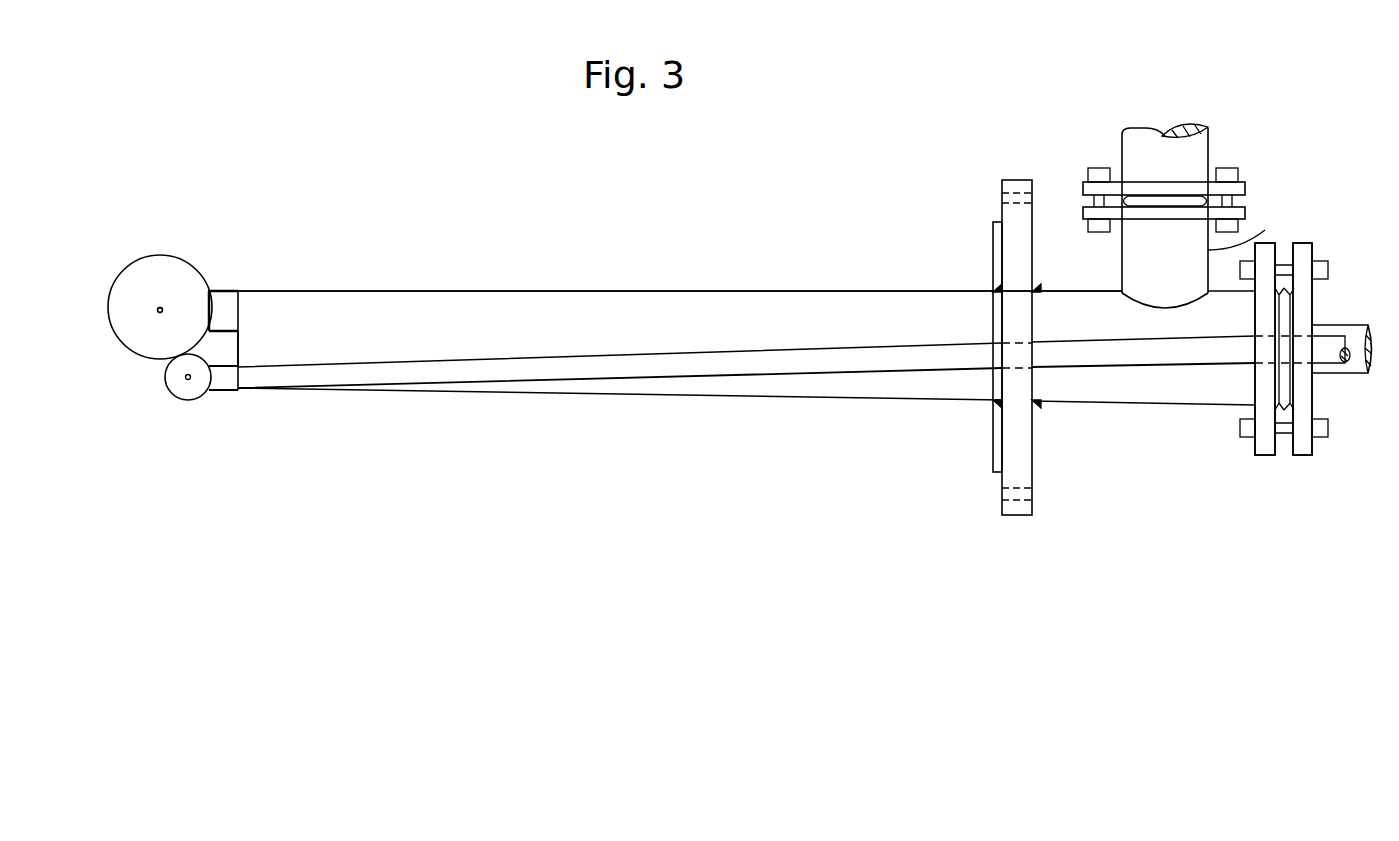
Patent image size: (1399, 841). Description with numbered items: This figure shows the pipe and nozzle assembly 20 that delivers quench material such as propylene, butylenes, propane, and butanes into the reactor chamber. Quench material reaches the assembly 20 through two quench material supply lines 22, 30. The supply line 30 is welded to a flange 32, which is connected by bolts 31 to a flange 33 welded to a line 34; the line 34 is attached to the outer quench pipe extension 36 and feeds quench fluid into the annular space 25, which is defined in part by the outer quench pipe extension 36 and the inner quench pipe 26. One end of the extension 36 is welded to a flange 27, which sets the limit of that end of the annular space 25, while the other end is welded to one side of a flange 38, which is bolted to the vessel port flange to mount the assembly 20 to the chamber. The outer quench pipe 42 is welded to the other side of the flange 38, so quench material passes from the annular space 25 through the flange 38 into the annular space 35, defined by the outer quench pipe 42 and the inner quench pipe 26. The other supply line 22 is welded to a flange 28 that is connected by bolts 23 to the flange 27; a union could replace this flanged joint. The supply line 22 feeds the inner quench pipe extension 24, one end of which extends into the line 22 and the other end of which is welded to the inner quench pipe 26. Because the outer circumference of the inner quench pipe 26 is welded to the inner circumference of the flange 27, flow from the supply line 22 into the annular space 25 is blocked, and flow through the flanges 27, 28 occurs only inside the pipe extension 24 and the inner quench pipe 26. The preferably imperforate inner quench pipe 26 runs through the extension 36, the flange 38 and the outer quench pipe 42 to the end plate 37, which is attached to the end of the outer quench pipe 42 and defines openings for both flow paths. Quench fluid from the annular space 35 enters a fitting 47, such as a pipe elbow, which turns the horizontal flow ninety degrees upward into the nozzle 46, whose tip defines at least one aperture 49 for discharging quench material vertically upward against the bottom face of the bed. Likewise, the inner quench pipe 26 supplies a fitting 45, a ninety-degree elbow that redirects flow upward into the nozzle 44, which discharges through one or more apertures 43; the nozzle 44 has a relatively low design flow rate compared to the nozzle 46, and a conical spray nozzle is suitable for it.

The pipe and nozzle assembly 20 is at (871, 152).
The quench material supply line 22 is at (1340, 325).
The bolts 23 is at (1319, 440).
The inner quench pipe extension 24 is at (1336, 370).
The annular space 25 is at (1121, 328).
The inner quench pipe 26 is at (795, 378).
The flange 27 is at (1252, 456).
The flange 28 is at (1314, 244).
The quench material supply line 30 is at (1120, 148).
The bolts 31 is at (1100, 168).
The flange 32 is at (1245, 189).
The flange 33 is at (1085, 213).
The line 34 is at (1212, 252).
The annular space 35 is at (544, 334).
The outer quench pipe extension 36 is at (1094, 402).
The plate 37 is at (240, 352).
The flange 38 is at (1020, 516).
The outer quench pipe 42 is at (612, 291).
The aperture 43 is at (183, 383).
The nozzle 44 is at (200, 400).
The fitting 45 is at (229, 391).
The nozzle 46 is at (185, 262).
The fitting 47 is at (226, 290).
The aperture 49 is at (153, 300).